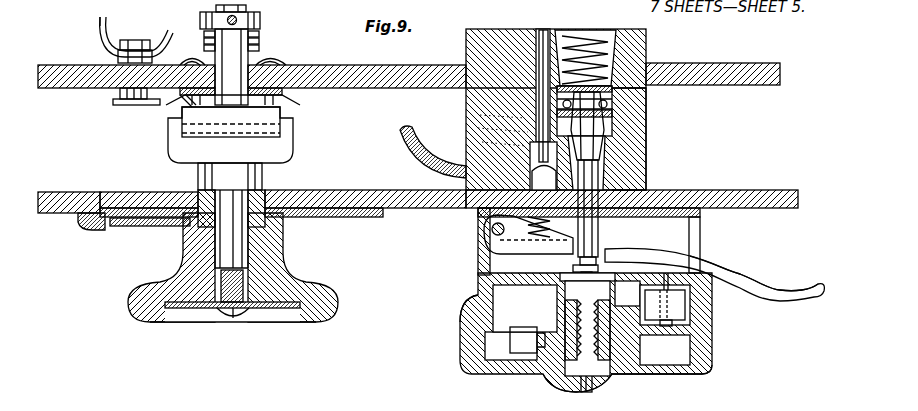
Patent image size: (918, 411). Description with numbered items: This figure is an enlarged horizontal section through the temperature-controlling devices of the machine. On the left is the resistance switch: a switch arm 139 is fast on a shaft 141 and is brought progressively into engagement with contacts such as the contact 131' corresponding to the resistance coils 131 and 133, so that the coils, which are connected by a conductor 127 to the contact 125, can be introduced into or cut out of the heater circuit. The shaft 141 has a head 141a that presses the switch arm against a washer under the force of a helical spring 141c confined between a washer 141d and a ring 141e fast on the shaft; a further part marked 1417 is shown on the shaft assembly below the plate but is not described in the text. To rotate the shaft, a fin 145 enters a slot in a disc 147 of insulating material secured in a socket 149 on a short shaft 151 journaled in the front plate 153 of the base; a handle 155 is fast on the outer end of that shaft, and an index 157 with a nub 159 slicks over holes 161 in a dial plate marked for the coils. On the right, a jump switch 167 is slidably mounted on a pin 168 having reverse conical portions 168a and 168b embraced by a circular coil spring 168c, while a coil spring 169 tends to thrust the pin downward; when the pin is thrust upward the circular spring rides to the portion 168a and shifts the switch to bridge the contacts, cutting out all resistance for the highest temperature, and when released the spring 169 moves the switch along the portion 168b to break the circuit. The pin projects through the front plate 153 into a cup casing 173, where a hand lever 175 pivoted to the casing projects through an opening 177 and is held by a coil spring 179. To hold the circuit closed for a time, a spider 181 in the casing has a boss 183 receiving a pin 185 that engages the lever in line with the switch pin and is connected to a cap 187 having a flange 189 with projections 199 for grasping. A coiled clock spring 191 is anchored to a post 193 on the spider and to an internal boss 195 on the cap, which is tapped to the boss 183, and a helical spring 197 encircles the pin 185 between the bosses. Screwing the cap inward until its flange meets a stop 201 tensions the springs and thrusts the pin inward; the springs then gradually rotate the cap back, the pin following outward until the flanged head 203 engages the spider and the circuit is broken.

The contact 125 is at (466, 129).
The conductor 127 is at (400, 143).
The resistance coil 131 is at (137, 35).
The contact 131' is at (113, 104).
The resistance coil 133 is at (100, 23).
The switch arm 139 is at (188, 99).
The shaft 141 is at (236, 50).
The head 141a is at (201, 165).
The helical spring 141c is at (259, 37).
The washer 141d is at (282, 62).
The ring 141e is at (260, 19).
The spring washer 1417 is at (282, 92).
The fin 145 is at (233, 107).
The disc 147 is at (293, 125).
The socket 149 is at (287, 144).
The short shaft 151 is at (237, 201).
The front plate 153 is at (320, 193).
The handle 155 is at (128, 301).
The index 157 is at (153, 227).
The nub 159 is at (83, 228).
The holes 161 is at (101, 200).
The jump switch 167 is at (612, 104).
The pin 168 is at (628, 183).
The conical portion 168a is at (606, 150).
The conical portion 168b is at (612, 119).
The circular coil spring 168c is at (618, 90).
The coil spring 169 is at (593, 38).
The cup casing 173 is at (475, 241).
The hand lever 175 is at (736, 278).
The opening 177 is at (700, 243).
The coil spring 179 is at (533, 234).
The spider 181 is at (530, 277).
The boss 183 is at (565, 300).
The pin 185 is at (560, 313).
The cap 187 is at (532, 368).
The flange 189 is at (482, 337).
The coiled clock spring 191 is at (655, 303).
The post 193 is at (646, 262).
The internal boss 195 is at (630, 342).
The helical spring 197 is at (622, 372).
The projections 199 is at (470, 349).
The stop 201 is at (480, 293).
The flanged head 203 is at (604, 276).